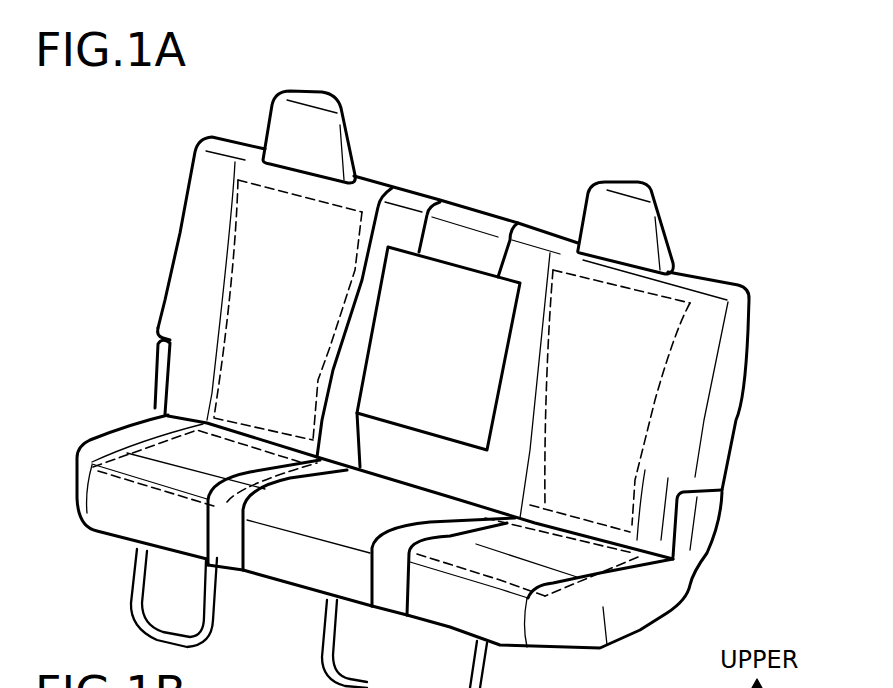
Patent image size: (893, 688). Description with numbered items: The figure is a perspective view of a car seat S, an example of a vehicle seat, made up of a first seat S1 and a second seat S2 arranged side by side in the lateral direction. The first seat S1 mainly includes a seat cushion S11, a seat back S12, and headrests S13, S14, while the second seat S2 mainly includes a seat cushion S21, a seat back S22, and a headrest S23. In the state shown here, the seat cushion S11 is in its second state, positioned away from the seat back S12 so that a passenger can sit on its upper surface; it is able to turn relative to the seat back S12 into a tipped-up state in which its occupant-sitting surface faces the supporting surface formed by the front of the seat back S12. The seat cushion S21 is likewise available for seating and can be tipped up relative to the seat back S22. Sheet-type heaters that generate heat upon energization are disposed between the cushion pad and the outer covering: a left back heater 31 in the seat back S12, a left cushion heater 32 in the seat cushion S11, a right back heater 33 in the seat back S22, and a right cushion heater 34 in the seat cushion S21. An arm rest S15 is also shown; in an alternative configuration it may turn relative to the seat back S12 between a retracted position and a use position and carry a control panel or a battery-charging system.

The car seat S is at (597, 140).
The first seat S1 is at (737, 273).
The second seat S2 is at (188, 133).
The seat cushion S11 is at (551, 628).
The seat back S12 is at (703, 371).
The headrest S13 is at (645, 189).
The headrest S14 is at (473, 214).
The arm rest S15 is at (410, 400).
The seat cushion S21 is at (127, 522).
The seat back S22 is at (203, 217).
The headrest S23 is at (340, 113).
The left back heater 31 is at (652, 405).
The left cushion heater 32 is at (617, 580).
The right back heater 33 is at (233, 282).
The right cushion heater 34 is at (130, 445).